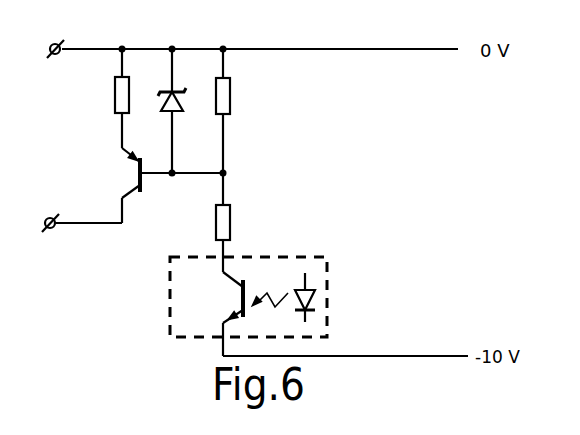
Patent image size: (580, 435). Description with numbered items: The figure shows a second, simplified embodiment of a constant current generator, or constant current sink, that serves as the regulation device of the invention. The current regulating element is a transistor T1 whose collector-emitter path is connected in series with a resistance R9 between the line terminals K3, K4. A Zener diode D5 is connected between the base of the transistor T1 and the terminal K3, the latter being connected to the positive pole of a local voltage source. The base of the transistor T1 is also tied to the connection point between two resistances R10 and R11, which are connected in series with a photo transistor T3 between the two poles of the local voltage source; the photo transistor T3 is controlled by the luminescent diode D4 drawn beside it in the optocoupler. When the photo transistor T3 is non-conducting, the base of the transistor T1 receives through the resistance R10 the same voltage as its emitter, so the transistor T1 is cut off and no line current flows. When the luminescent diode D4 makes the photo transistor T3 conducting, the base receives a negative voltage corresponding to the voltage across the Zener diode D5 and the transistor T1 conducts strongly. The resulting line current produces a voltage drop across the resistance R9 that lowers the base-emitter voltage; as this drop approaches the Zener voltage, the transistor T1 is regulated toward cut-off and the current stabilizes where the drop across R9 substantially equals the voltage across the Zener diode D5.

The line terminal K3 is at (53, 35).
The line terminal K4 is at (80, 211).
The resistance R9 is at (115, 93).
The Zener diode D5 is at (180, 111).
The resistance R10 is at (230, 98).
The transistor T1 is at (138, 173).
The resistance R11 is at (230, 236).
The photo transistor T3 is at (238, 297).
The luminescent diode D4 is at (312, 285).